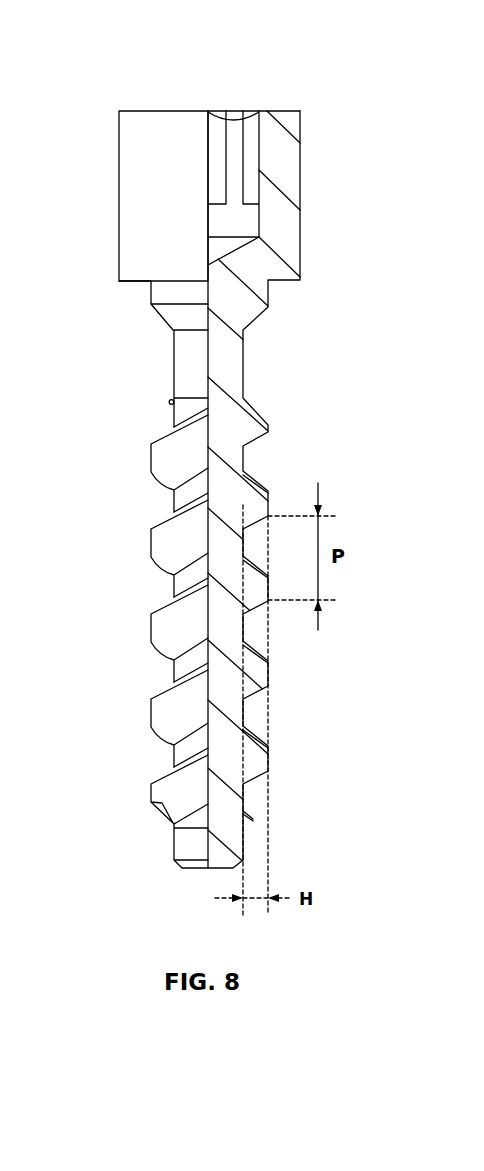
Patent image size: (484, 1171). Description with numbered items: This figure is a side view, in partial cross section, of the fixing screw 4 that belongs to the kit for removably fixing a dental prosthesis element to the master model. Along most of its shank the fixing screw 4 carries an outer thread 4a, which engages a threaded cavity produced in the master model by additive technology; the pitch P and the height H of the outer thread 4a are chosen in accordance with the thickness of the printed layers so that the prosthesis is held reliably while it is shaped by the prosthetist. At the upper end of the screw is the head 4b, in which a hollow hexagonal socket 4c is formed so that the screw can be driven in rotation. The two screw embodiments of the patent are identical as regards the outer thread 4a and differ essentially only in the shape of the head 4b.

The fixing screw 4 is at (128, 494).
The outer thread 4a is at (160, 628).
The head 4b is at (138, 224).
The hollow hexagonal socket 4c is at (218, 135).